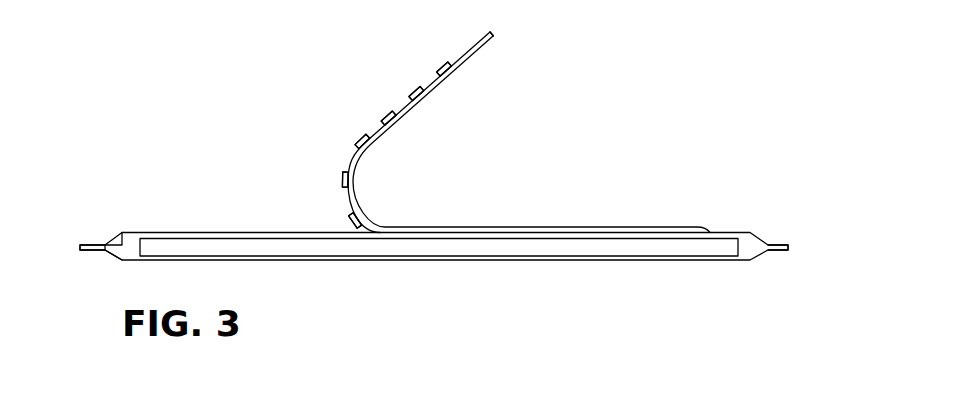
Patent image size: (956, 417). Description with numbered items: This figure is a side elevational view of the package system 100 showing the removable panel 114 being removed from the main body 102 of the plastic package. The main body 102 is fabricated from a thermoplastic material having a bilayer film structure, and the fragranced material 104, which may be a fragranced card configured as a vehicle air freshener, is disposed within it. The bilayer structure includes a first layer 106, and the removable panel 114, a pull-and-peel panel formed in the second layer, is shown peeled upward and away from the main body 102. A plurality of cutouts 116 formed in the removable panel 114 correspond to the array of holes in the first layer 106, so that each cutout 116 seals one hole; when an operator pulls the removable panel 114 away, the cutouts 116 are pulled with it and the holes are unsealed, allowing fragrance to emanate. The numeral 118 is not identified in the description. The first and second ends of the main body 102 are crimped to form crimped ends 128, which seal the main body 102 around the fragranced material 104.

The package system 100 is at (678, 146).
The main body 102 is at (86, 226).
The fragranced material 104 is at (147, 243).
The first layer 106 is at (391, 111).
The removable panel 114 is at (479, 50).
The cutouts 116 is at (396, 145).
The distal end of strip 118 is at (489, 31).
The crimped ends 128 is at (85, 248).